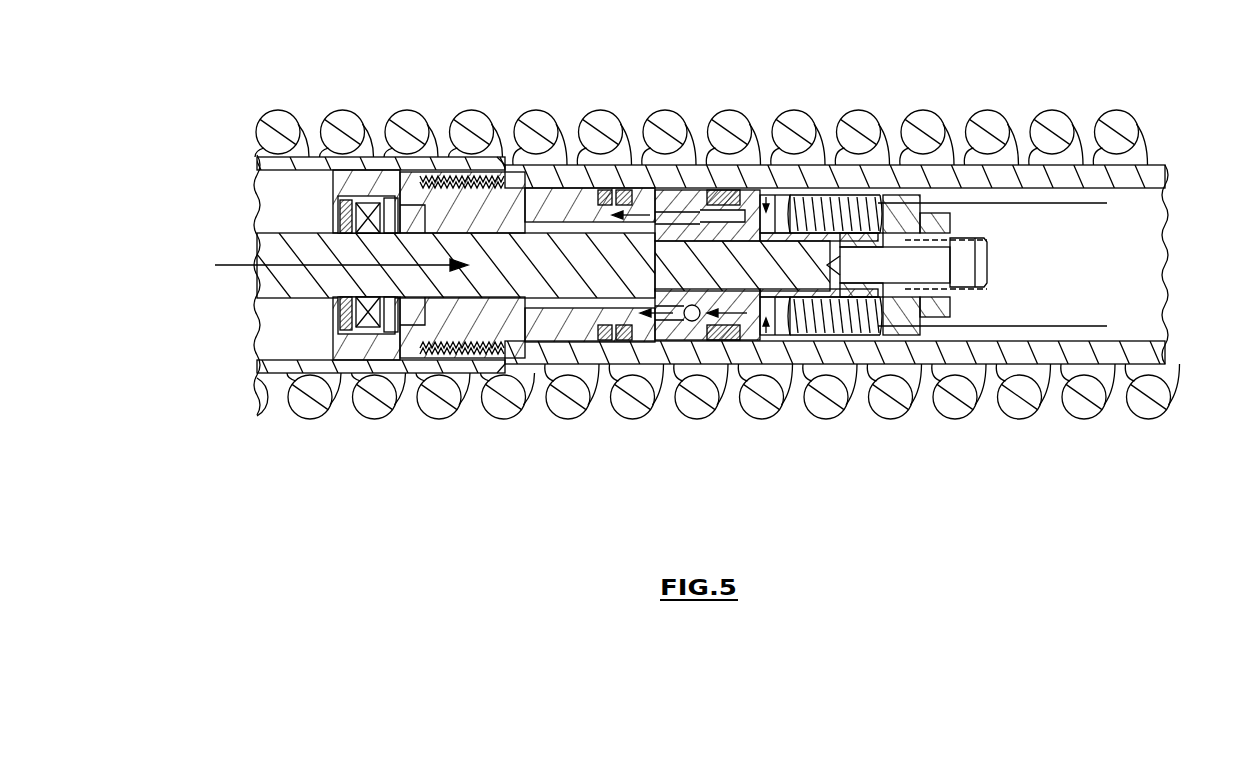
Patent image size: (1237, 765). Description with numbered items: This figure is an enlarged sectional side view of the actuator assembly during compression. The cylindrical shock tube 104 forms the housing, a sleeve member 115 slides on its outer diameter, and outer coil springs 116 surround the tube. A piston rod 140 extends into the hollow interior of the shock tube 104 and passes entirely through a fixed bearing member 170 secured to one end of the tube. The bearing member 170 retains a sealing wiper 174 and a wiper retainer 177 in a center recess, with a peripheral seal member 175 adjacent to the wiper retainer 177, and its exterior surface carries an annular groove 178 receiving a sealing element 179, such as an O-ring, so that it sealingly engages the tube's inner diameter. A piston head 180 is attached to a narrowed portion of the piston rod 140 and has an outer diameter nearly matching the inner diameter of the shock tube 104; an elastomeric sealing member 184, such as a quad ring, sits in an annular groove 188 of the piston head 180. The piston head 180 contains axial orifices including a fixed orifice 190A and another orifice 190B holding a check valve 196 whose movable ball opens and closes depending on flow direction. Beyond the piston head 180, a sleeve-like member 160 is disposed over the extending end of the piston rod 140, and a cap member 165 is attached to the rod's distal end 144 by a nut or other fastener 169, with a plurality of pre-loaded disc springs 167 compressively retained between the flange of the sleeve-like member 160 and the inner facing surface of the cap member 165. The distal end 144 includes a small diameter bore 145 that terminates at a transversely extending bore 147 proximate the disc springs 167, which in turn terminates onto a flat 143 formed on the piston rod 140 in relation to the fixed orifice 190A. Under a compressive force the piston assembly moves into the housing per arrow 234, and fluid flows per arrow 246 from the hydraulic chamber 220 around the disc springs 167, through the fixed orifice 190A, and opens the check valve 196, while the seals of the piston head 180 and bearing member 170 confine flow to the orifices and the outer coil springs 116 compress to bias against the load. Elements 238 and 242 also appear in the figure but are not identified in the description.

The cylindrical shock tube 104 is at (893, 165).
The sleeve member 115 is at (441, 168).
The outer coil springs 116 is at (388, 122).
The piston rod 140 is at (528, 262).
The flat 143 is at (820, 200).
The distal end portion of the piston rod 144 is at (975, 238).
The small diameter bore 145 is at (983, 270).
The transversely extending bore 147 is at (847, 245).
The sleeve-like member 160 is at (783, 322).
The cap member 165 is at (935, 327).
The disc springs 167 is at (905, 327).
The nut or other fastener 169 is at (940, 214).
The bearing member 170 is at (410, 318).
The sealing wiper 174 is at (357, 210).
The peripheral seal member 175 is at (417, 210).
The wiper retainer 177 is at (348, 322).
The annular groove 178 is at (631, 190).
The sealing element 179 is at (612, 190).
The piston head 180 is at (650, 210).
The elastomeric sealing member 184 is at (724, 190).
The annular groove 188 is at (737, 195).
The fixed orifice 190A is at (716, 236).
The orifice 190B is at (733, 322).
The check valve 196 is at (722, 334).
The hydraulic chamber 220 is at (1127, 303).
The arrow 234 is at (245, 265).
The inner surface 238 is at (990, 203).
The shoulder 242 is at (762, 195).
The arrow 246 is at (641, 312).